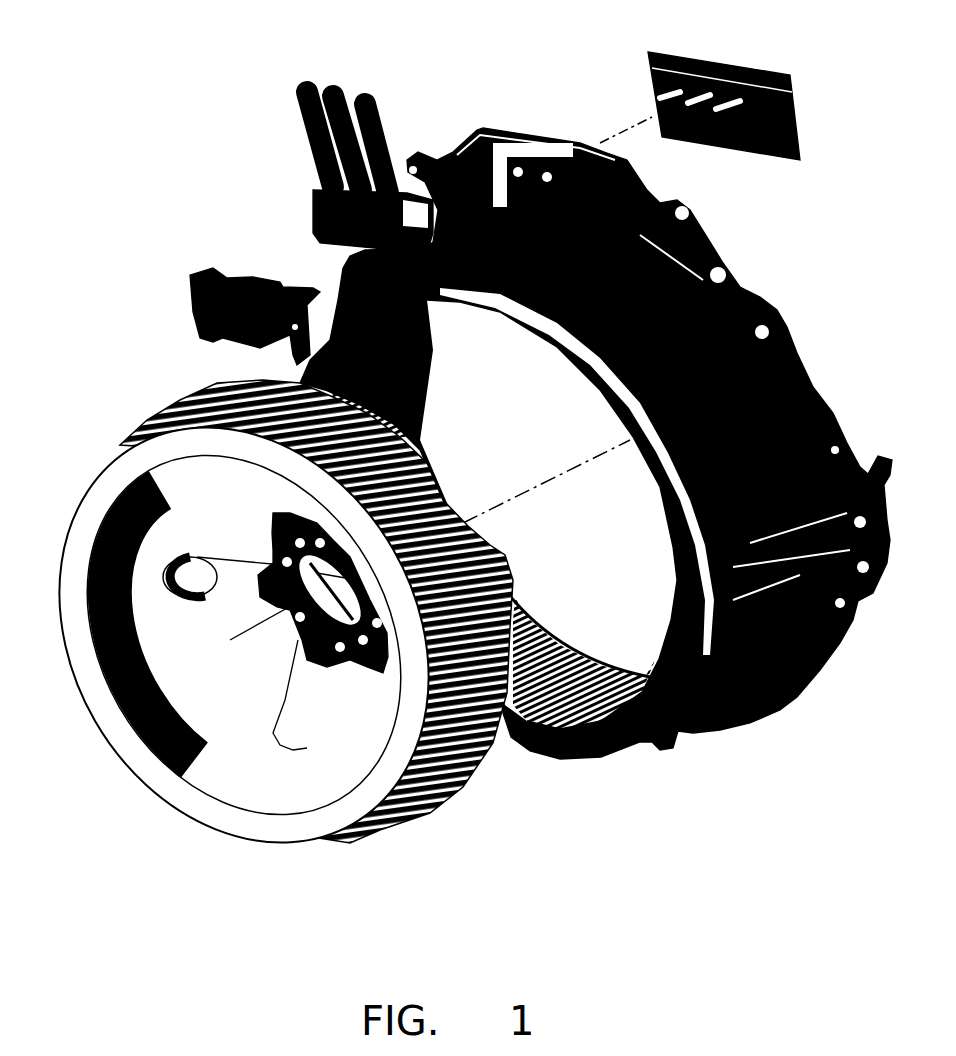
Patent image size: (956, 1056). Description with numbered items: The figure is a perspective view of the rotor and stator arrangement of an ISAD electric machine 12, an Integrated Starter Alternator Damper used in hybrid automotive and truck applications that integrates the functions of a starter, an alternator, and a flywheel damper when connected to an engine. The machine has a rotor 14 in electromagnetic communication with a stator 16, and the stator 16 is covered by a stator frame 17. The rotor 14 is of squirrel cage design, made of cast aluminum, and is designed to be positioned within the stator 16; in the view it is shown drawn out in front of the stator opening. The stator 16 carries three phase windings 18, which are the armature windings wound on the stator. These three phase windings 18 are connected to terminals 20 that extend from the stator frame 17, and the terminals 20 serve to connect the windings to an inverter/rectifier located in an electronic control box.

The ISAD electric machine 12 is at (446, 459).
The rotor 14 is at (70, 505).
The stator 16 is at (523, 320).
The stator frame 17 is at (783, 707).
The three phase windings 18 is at (556, 640).
The terminals 20 is at (390, 132).